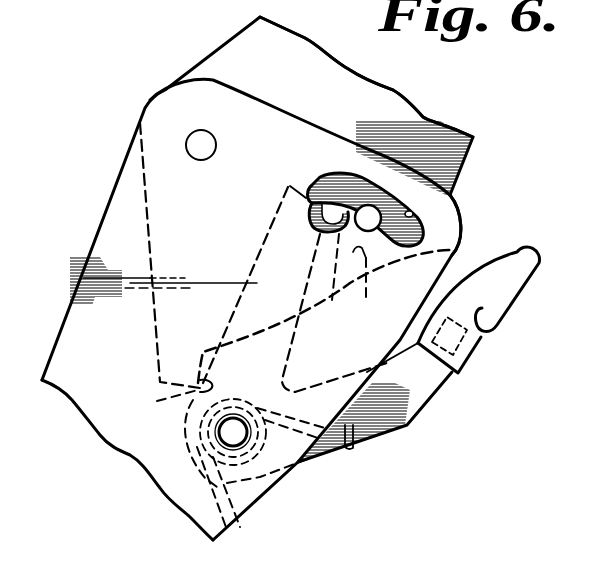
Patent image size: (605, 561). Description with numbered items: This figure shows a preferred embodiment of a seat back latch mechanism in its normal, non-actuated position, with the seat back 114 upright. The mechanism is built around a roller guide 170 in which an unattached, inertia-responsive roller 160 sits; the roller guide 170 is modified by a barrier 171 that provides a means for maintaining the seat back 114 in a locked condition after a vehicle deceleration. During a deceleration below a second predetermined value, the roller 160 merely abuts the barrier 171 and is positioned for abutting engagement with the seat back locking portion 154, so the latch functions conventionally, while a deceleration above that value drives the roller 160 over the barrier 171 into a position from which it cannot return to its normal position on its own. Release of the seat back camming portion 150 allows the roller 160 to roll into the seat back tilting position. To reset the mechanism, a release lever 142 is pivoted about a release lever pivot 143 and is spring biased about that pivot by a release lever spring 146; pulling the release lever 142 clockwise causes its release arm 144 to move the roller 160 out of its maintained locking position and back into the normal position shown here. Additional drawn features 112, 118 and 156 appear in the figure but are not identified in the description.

The plate body 112 is at (123, 260).
The seat back 114 is at (243, 50).
The mounting hole 118 is at (200, 130).
The release lever 142 is at (478, 348).
The release lever pivot 143 is at (227, 430).
The release arm 144 is at (268, 228).
The release lever spring 146 is at (350, 450).
The seat back camming portion 150 is at (458, 250).
The seat back locking portion 154 is at (336, 313).
The hidden boss outline 156 is at (157, 401).
The roller 160 is at (370, 212).
The roller guide 170 is at (416, 213).
The barrier 171 is at (340, 175).